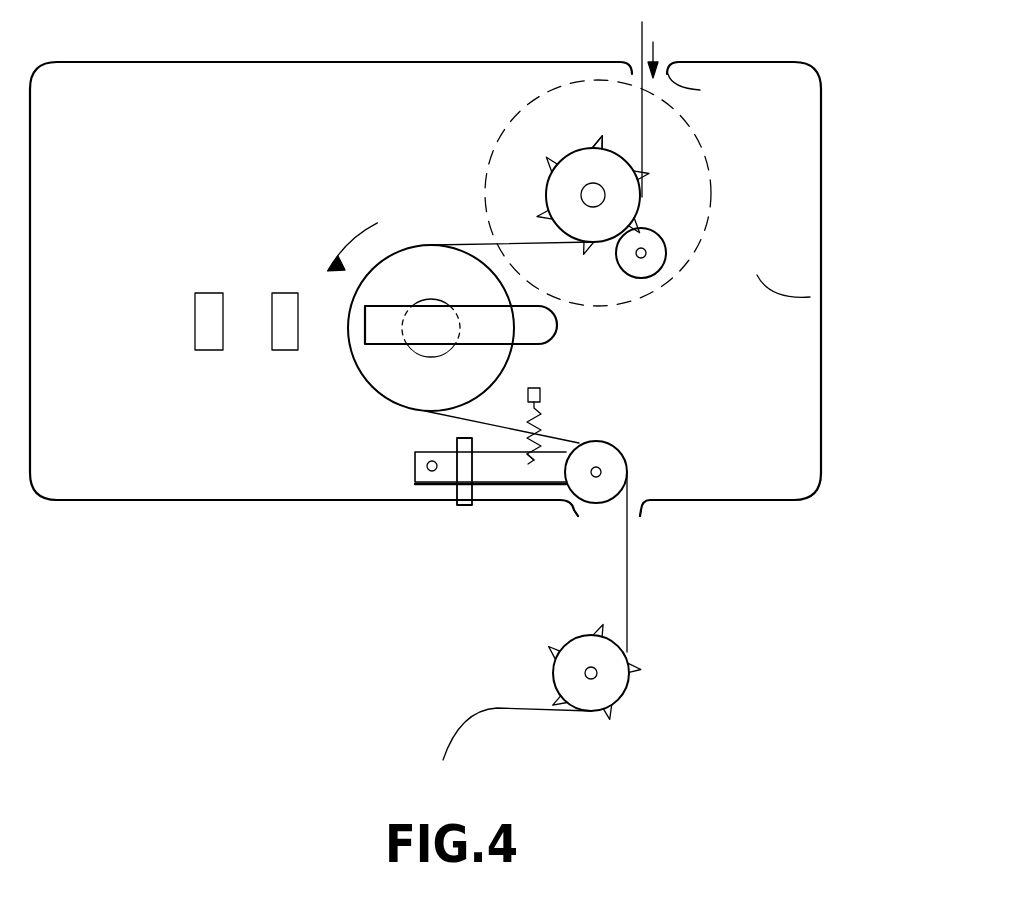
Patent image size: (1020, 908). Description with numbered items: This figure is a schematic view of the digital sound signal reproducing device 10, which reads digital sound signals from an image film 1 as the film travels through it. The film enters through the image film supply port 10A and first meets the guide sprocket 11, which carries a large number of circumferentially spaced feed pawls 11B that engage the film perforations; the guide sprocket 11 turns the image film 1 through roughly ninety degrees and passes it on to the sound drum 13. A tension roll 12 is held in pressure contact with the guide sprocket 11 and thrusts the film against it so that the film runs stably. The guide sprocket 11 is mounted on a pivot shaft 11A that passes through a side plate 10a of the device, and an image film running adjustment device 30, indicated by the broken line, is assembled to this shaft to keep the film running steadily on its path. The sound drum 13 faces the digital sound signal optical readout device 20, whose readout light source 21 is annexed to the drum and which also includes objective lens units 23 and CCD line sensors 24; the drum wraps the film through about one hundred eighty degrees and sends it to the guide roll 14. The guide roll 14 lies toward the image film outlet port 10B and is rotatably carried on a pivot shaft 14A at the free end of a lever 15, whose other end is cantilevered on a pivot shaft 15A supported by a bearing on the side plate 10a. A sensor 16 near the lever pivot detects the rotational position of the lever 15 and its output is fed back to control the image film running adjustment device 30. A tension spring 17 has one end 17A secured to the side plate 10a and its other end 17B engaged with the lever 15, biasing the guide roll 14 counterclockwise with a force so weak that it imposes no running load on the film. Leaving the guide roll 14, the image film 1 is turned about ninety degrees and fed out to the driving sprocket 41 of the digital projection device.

The image film 1 is at (643, 35).
The digital sound signal reproducing device 10 is at (821, 213).
The image film supply port 10A is at (700, 90).
The side plate 10a is at (810, 297).
The image film outlet port 10B is at (580, 518).
The guide sprocket 11 is at (562, 183).
The pivot shaft 11A is at (592, 186).
The feed pawls 11B is at (597, 136).
The tension roll 12 is at (642, 268).
The sound drum 13 is at (387, 372).
The guide roll 14 is at (598, 457).
The pivot shaft 14A is at (596, 480).
The lever 15 is at (480, 484).
The pivot shaft 15A is at (415, 478).
The sensor 16 is at (458, 488).
The tension spring 17 is at (541, 428).
The one end of tension spring 17A is at (542, 393).
The other end of tension spring 17B is at (525, 465).
The digital sound signal optical readout device 20 is at (227, 259).
The readout light source 21 is at (378, 324).
The objective lens units 23 is at (257, 282).
The CCD line sensors 24 is at (208, 296).
The image film running adjustment device 30 is at (707, 150).
The driving sprocket 41 is at (613, 690).